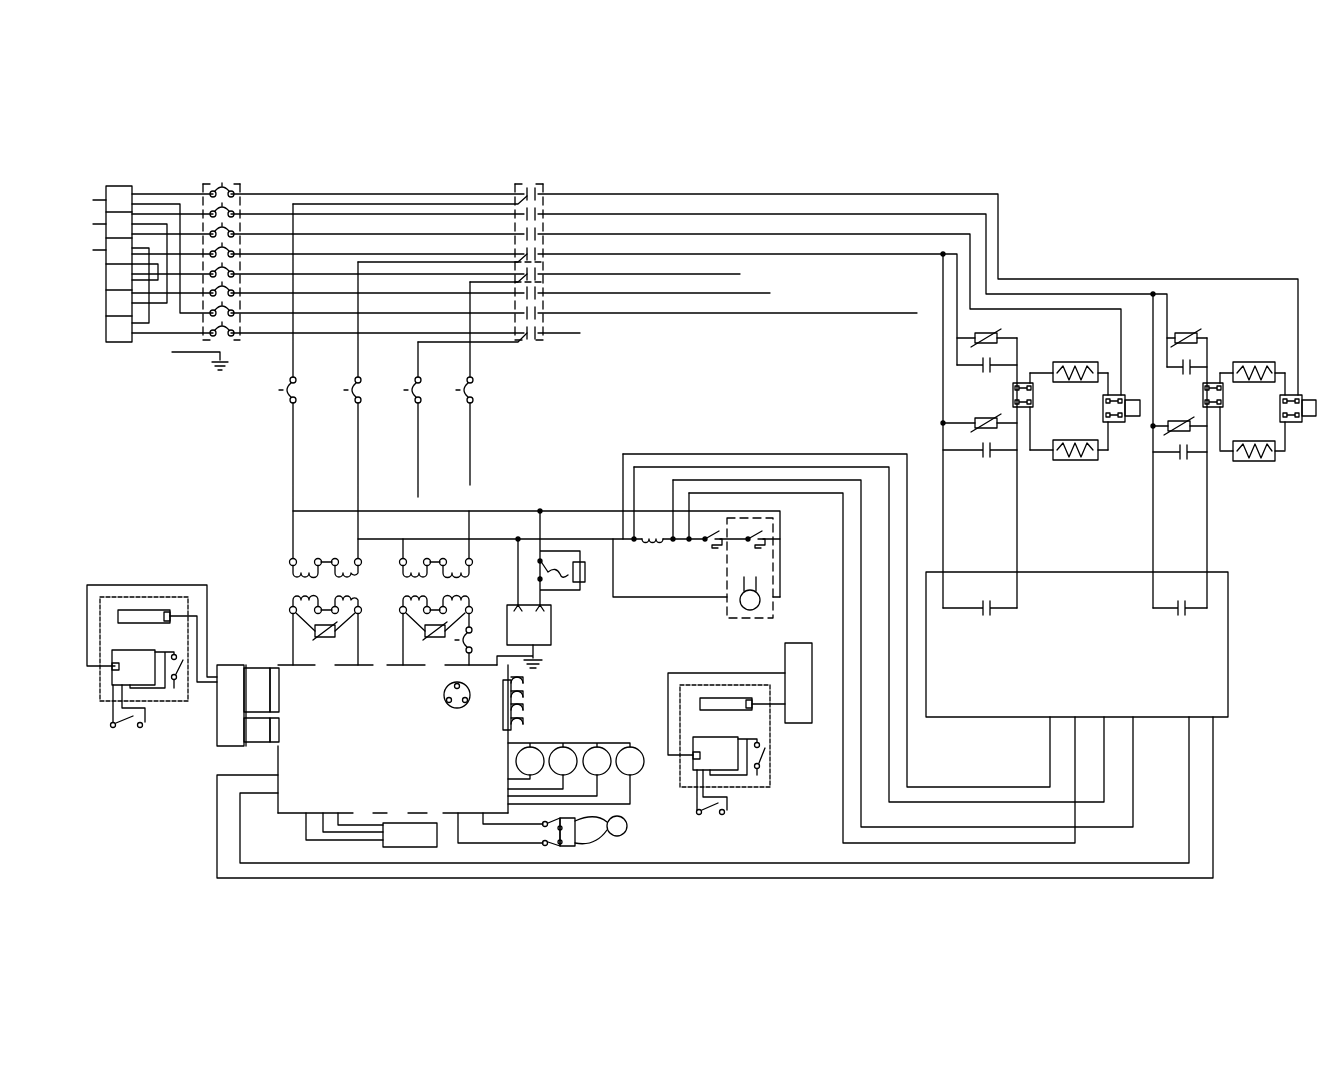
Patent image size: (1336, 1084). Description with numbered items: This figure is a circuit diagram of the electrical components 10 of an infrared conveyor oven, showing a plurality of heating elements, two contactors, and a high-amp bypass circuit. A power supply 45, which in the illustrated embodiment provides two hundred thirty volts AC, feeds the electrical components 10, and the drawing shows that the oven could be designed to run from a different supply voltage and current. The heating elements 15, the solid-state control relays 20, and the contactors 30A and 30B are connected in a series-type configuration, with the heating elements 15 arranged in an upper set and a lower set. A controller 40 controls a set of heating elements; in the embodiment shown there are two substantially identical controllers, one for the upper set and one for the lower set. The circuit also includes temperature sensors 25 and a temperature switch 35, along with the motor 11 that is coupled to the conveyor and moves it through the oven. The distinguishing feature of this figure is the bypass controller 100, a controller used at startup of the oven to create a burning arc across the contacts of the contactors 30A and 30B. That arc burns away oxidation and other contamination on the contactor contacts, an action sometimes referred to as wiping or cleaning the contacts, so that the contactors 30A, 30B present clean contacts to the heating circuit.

The electrical components 10 is at (243, 97).
The power supply 45 is at (115, 185).
The contactor 30A is at (529, 181).
The contactor 30B is at (533, 352).
The solid-state control relays 20 is at (996, 336).
The heating elements 15 is at (1078, 362).
The bypass controller 100 is at (1207, 683).
The temperature switch 35 is at (762, 556).
The temperature sensors 25 is at (541, 703).
The controller 40 is at (295, 784).
The motor 11 is at (627, 831).